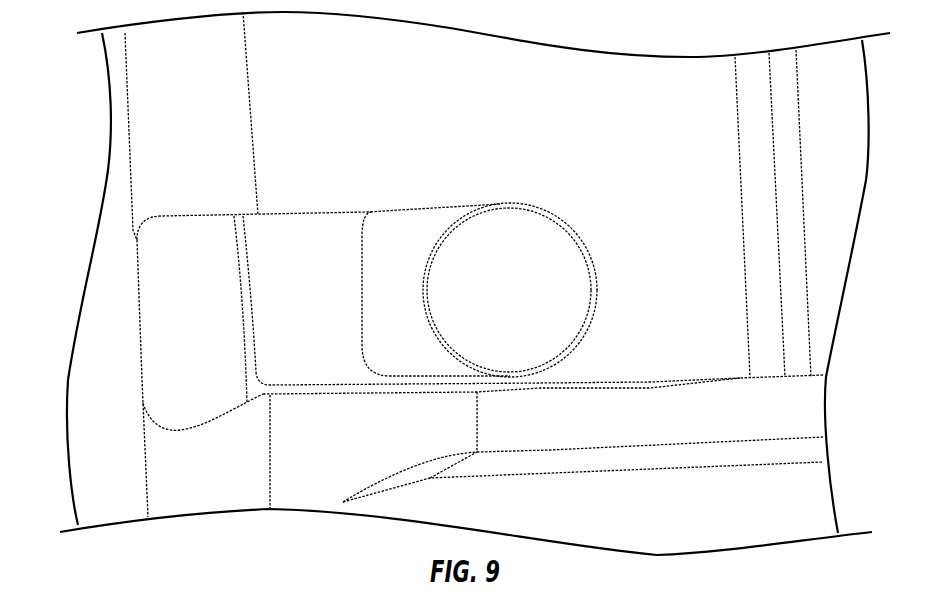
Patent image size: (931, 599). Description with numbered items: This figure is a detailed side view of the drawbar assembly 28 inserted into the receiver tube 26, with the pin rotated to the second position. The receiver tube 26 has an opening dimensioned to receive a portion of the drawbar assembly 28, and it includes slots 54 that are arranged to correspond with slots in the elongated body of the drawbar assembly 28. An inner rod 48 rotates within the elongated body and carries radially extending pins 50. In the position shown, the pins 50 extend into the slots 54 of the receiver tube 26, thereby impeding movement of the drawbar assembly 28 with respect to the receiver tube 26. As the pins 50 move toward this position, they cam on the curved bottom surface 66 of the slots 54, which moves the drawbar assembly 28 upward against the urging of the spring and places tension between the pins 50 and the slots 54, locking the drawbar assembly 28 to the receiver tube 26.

The receiver tube 26 is at (137, 92).
The drawbar assembly 28 is at (303, 213).
The inner rod 48 is at (410, 220).
The pins 50 is at (547, 240).
The slots 54 is at (223, 247).
The curved bottom surface 66 is at (185, 430).